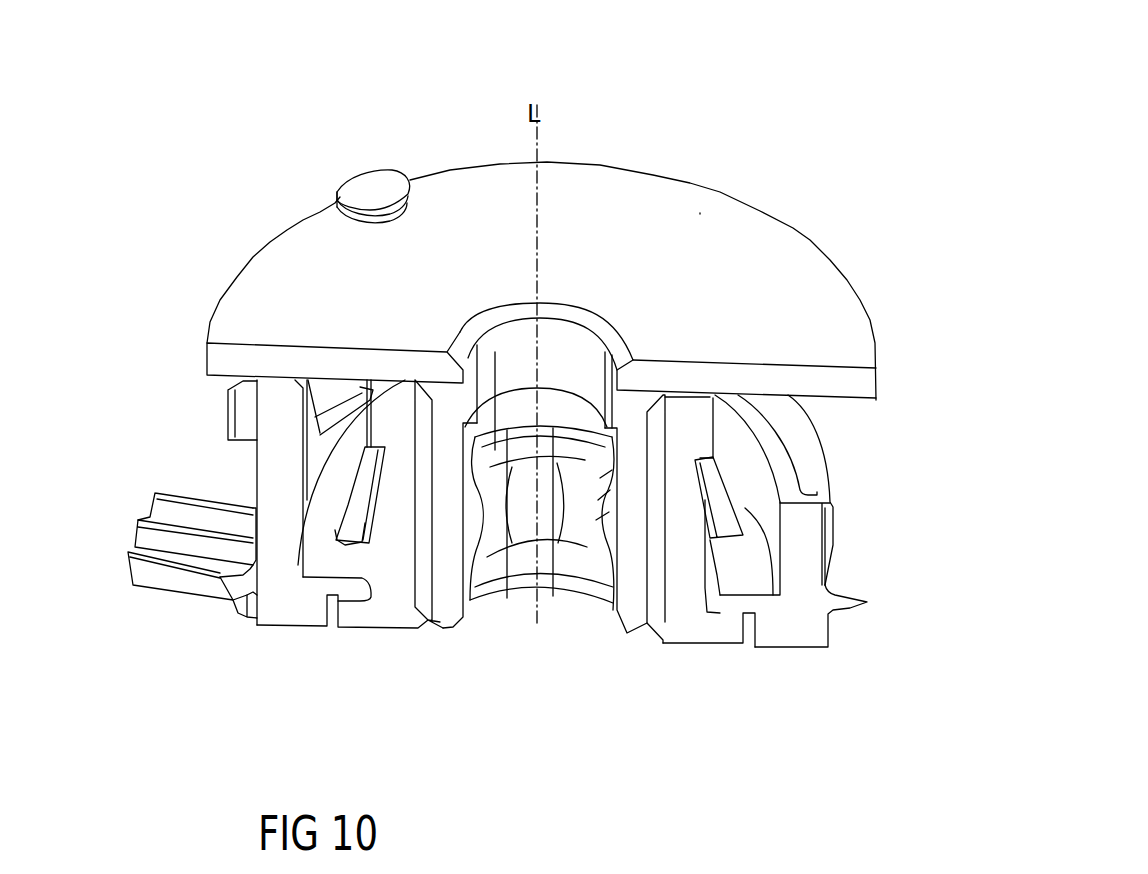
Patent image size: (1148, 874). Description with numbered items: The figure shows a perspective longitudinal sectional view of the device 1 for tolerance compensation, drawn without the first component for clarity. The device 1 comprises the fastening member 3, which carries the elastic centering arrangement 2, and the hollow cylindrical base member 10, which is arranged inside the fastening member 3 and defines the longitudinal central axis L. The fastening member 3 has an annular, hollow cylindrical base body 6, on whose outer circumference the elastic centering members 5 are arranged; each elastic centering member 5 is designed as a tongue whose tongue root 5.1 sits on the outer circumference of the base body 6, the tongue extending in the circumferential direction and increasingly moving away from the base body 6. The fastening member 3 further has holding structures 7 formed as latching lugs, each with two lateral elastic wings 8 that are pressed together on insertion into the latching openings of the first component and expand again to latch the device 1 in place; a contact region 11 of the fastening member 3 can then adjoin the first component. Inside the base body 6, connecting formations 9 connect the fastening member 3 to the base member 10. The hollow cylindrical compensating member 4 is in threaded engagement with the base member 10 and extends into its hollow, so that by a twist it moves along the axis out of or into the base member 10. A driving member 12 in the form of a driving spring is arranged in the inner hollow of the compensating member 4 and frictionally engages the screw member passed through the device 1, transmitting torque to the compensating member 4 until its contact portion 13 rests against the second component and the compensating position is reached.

The device 1 is at (808, 116).
The elastic centering arrangement 2 is at (853, 463).
The fastening member 3 is at (811, 665).
The compensating member 4 is at (633, 620).
The elastic centering member 5 is at (816, 442).
The tongue root 5.1 is at (822, 497).
The base body 6 is at (803, 635).
The holding structure 7 is at (135, 584).
The lateral elastic wing 8 is at (153, 495).
The connecting formation 9 is at (353, 528).
The base member 10 is at (680, 623).
The contact region 11 is at (277, 625).
The driving member 12 is at (575, 527).
The contact portion 13 is at (700, 214).